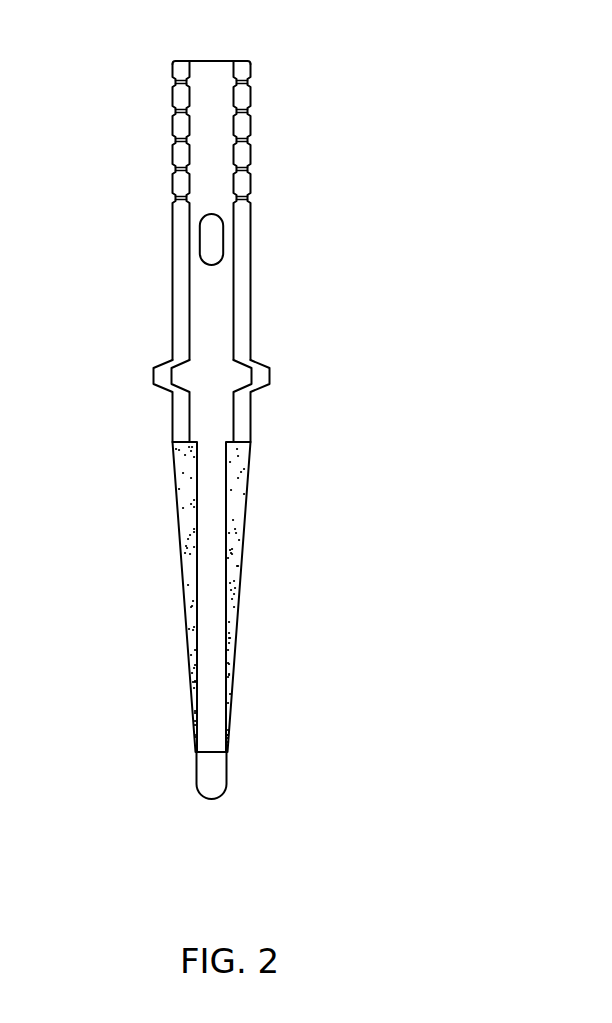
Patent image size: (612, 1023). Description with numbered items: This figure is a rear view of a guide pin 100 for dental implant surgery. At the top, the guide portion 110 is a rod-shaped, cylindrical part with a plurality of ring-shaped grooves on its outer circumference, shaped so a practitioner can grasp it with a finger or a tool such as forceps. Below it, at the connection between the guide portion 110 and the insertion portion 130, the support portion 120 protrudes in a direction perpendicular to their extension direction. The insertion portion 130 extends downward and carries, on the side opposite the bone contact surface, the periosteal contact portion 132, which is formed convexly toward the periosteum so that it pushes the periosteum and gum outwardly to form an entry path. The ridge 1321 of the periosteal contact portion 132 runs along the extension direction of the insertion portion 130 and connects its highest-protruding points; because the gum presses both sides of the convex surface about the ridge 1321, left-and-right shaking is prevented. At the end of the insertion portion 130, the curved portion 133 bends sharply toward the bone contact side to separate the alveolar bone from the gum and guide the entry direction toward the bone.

The guide pin 100 is at (247, 442).
The guide portion 110 is at (260, 68).
The support portion 120 is at (158, 370).
The insertion portion 130 is at (182, 573).
The periosteal contact portion 132 is at (237, 522).
The ridge 1321 is at (195, 617).
The curved portion 133 is at (215, 787).